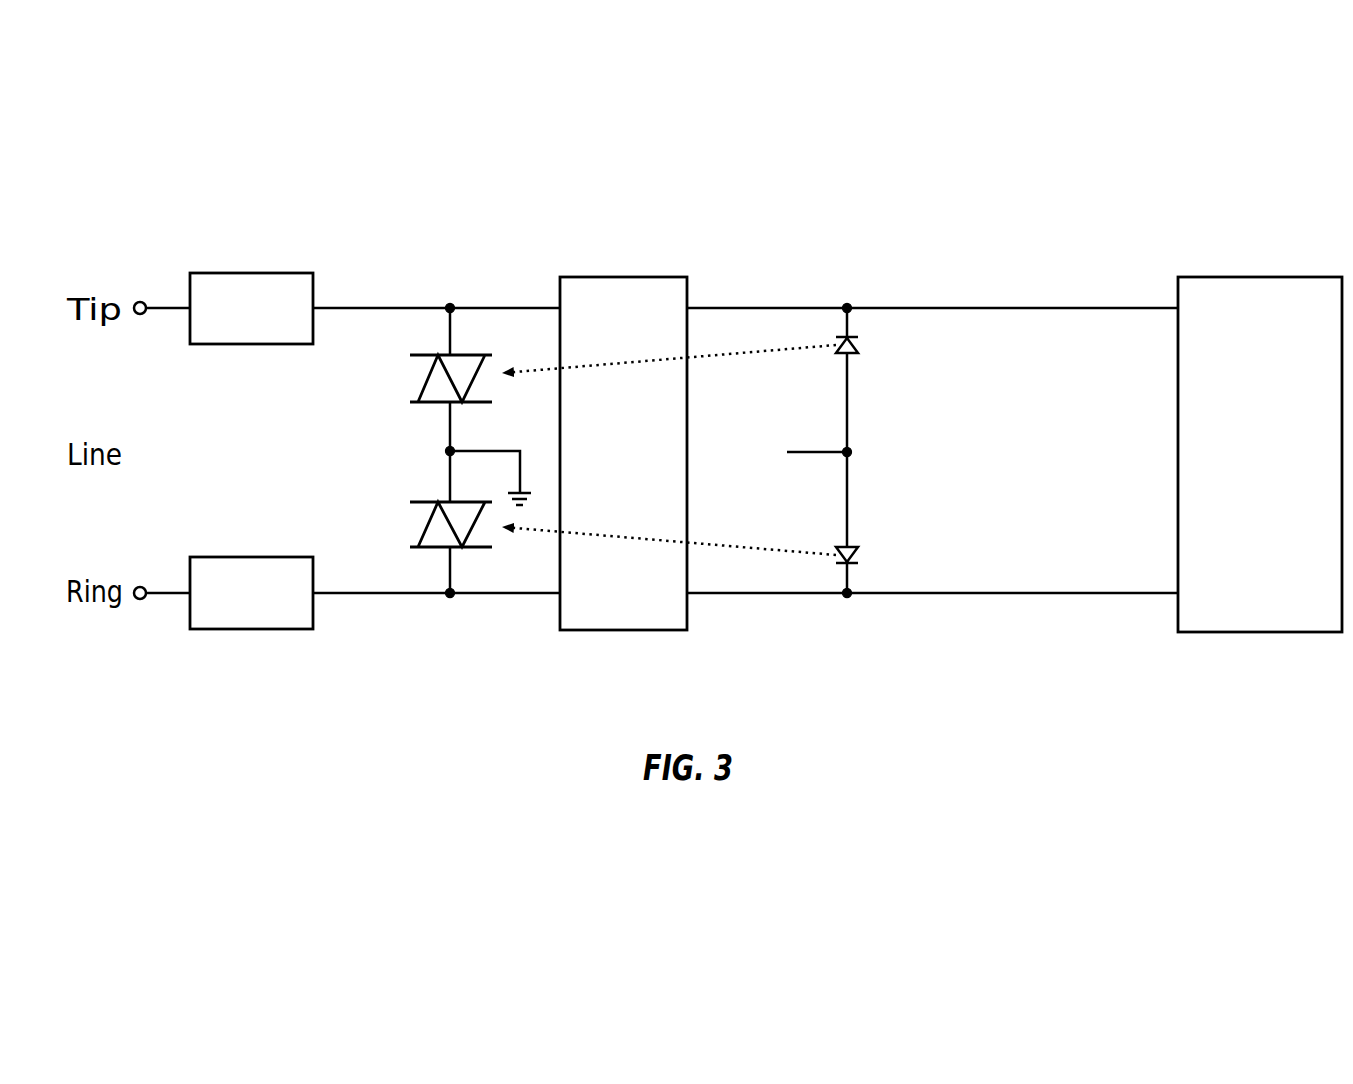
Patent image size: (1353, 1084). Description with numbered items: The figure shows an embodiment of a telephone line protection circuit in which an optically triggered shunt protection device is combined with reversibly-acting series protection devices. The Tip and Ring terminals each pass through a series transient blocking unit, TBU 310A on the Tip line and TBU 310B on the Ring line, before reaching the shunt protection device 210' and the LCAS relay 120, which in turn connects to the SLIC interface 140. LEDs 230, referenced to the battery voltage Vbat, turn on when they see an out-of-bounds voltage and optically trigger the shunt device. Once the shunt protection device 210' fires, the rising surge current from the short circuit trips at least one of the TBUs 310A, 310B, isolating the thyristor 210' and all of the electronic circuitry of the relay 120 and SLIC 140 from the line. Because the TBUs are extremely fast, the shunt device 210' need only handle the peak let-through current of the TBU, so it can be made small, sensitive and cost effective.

The TBU 310A is at (250, 273).
The TBU 310B is at (250, 630).
The shunt protection device 210' is at (450, 418).
The LCAS relay 120 is at (644, 522).
The LED 230 is at (868, 556).
The SLIC interface 140 is at (1280, 487).